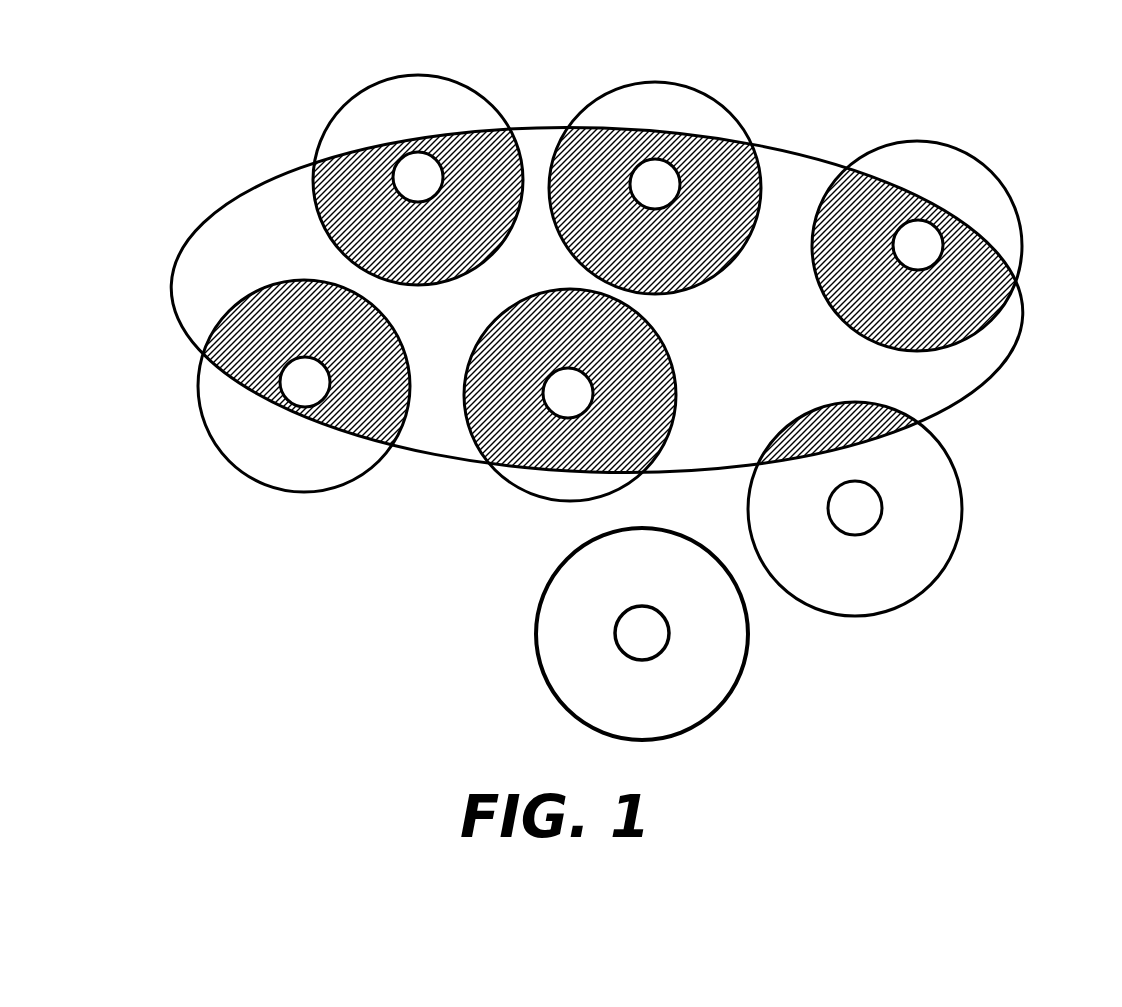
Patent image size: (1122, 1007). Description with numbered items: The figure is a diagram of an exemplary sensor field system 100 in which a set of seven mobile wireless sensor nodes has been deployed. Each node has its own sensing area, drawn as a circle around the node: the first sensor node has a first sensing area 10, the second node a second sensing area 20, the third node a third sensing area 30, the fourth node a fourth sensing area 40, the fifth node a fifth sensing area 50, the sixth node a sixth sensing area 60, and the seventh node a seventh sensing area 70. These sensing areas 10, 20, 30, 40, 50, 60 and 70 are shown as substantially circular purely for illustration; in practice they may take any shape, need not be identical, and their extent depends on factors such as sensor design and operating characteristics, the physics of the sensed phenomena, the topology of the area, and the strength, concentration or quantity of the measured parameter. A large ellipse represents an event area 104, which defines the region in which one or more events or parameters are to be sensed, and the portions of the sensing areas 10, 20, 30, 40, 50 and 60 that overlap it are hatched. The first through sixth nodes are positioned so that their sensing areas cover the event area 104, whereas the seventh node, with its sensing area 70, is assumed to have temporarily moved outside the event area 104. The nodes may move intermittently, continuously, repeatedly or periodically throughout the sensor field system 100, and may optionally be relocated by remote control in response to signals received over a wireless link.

The sensor field system 100 is at (207, 591).
The event area 104 is at (197, 228).
The first sensing area 10 is at (198, 377).
The second sensing area 20 is at (342, 109).
The third sensing area 30 is at (630, 86).
The fourth sensing area 40 is at (993, 168).
The fifth sensing area 50 is at (678, 370).
The sixth sensing area 60 is at (968, 485).
The seventh sensing area 70 is at (552, 577).